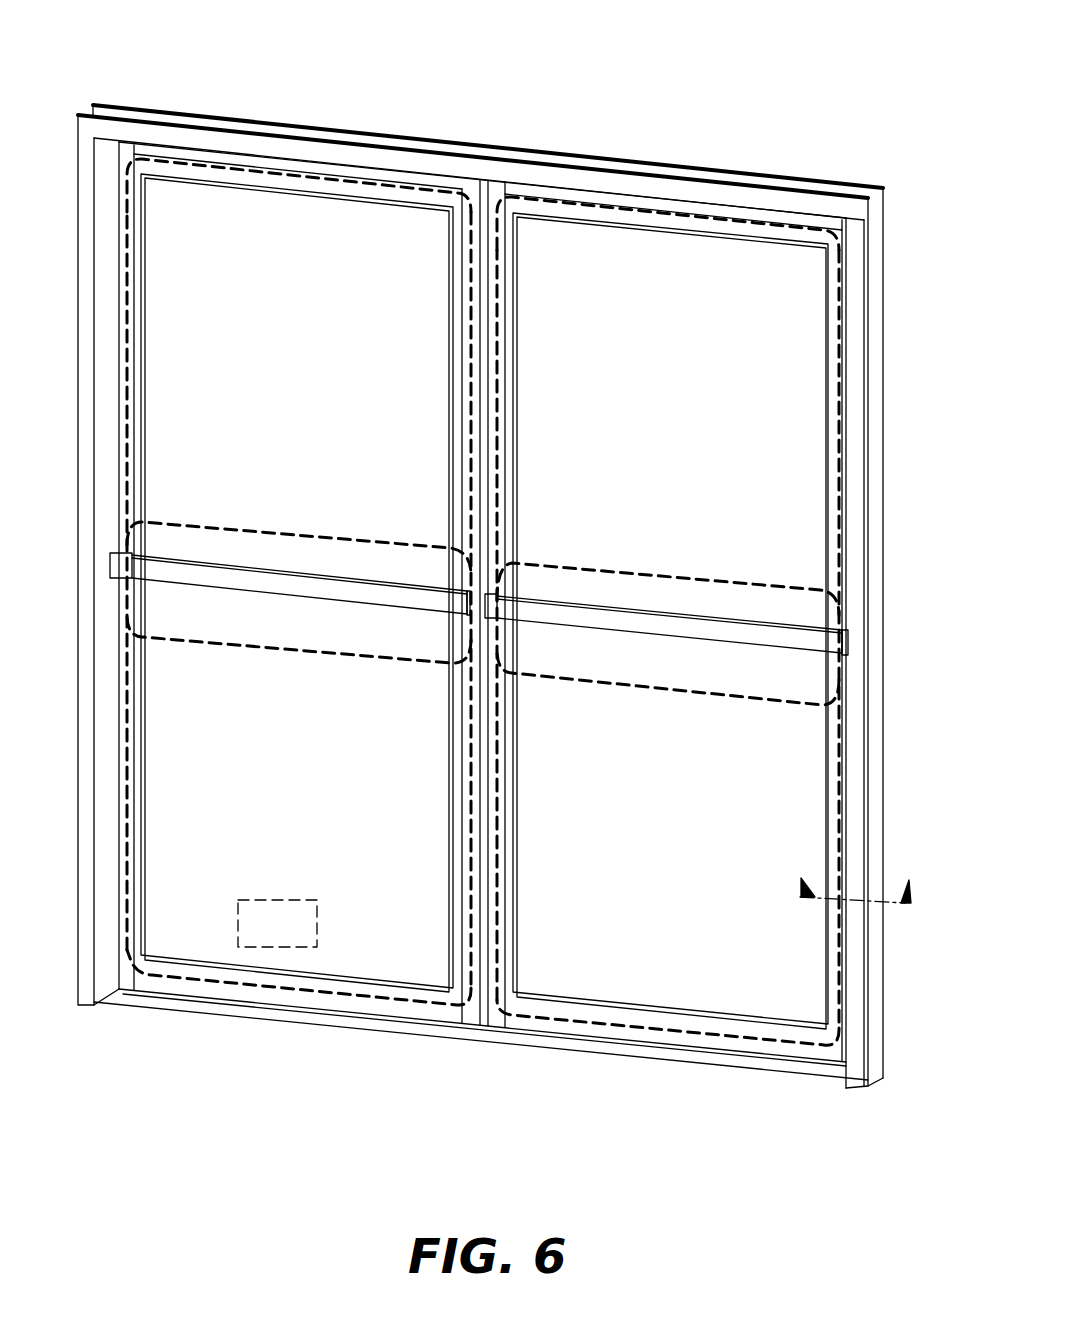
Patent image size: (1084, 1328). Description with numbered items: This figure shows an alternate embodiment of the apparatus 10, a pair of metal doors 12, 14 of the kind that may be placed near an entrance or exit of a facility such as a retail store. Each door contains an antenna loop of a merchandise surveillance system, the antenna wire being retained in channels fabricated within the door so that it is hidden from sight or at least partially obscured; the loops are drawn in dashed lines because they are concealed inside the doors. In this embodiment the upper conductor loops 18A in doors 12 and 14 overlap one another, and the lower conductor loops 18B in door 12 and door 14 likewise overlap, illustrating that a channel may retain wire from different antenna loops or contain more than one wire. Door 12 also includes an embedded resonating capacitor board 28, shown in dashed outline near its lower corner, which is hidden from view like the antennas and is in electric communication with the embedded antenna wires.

The apparatus 10 is at (546, 66).
The door 12 is at (306, 277).
The door 14 is at (682, 314).
The upper conductor loops 18A is at (260, 168).
The lower conductor loops 18B is at (278, 990).
The resonating capacitor board 28 is at (272, 920).